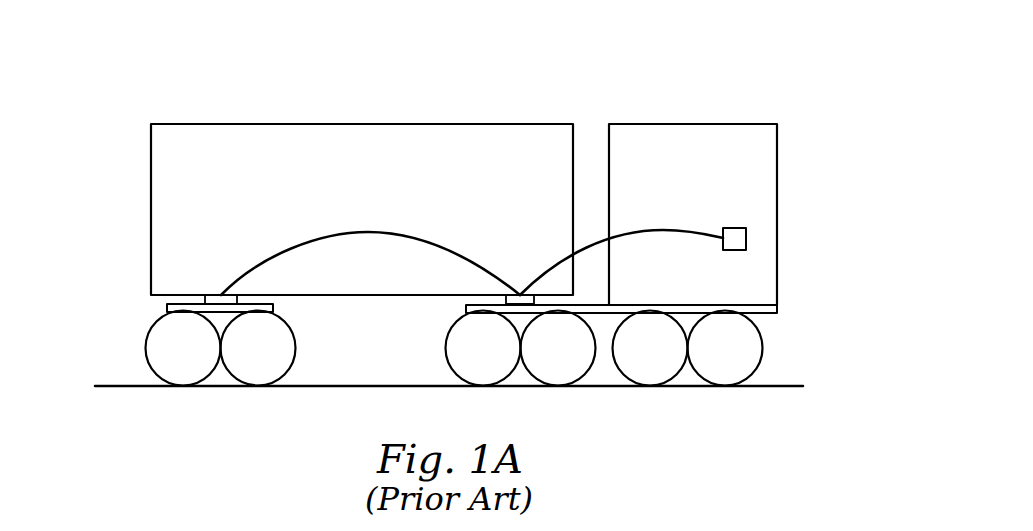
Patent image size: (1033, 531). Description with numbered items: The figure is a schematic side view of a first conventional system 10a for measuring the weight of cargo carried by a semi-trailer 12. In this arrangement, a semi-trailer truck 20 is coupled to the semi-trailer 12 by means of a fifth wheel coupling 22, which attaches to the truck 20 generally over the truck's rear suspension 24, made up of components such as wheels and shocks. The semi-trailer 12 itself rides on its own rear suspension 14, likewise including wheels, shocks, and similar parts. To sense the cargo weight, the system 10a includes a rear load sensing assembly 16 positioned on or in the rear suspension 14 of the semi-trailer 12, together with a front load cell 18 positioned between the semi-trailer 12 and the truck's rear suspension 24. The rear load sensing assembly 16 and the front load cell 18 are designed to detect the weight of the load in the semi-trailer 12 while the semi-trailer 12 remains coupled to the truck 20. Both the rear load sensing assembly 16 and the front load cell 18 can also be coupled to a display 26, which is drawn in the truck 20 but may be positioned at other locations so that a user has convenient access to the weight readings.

The first conventional system 10a is at (463, 234).
The semi-trailer 12 is at (236, 133).
The rear suspension 14 is at (210, 396).
The rear load sensing assembly 16 is at (207, 299).
The front load cell 18 is at (463, 303).
The semi-trailer truck 20 is at (767, 174).
The fifth wheel coupling 22 is at (524, 321).
The rear suspension 24 is at (527, 396).
The display 26 is at (746, 236).